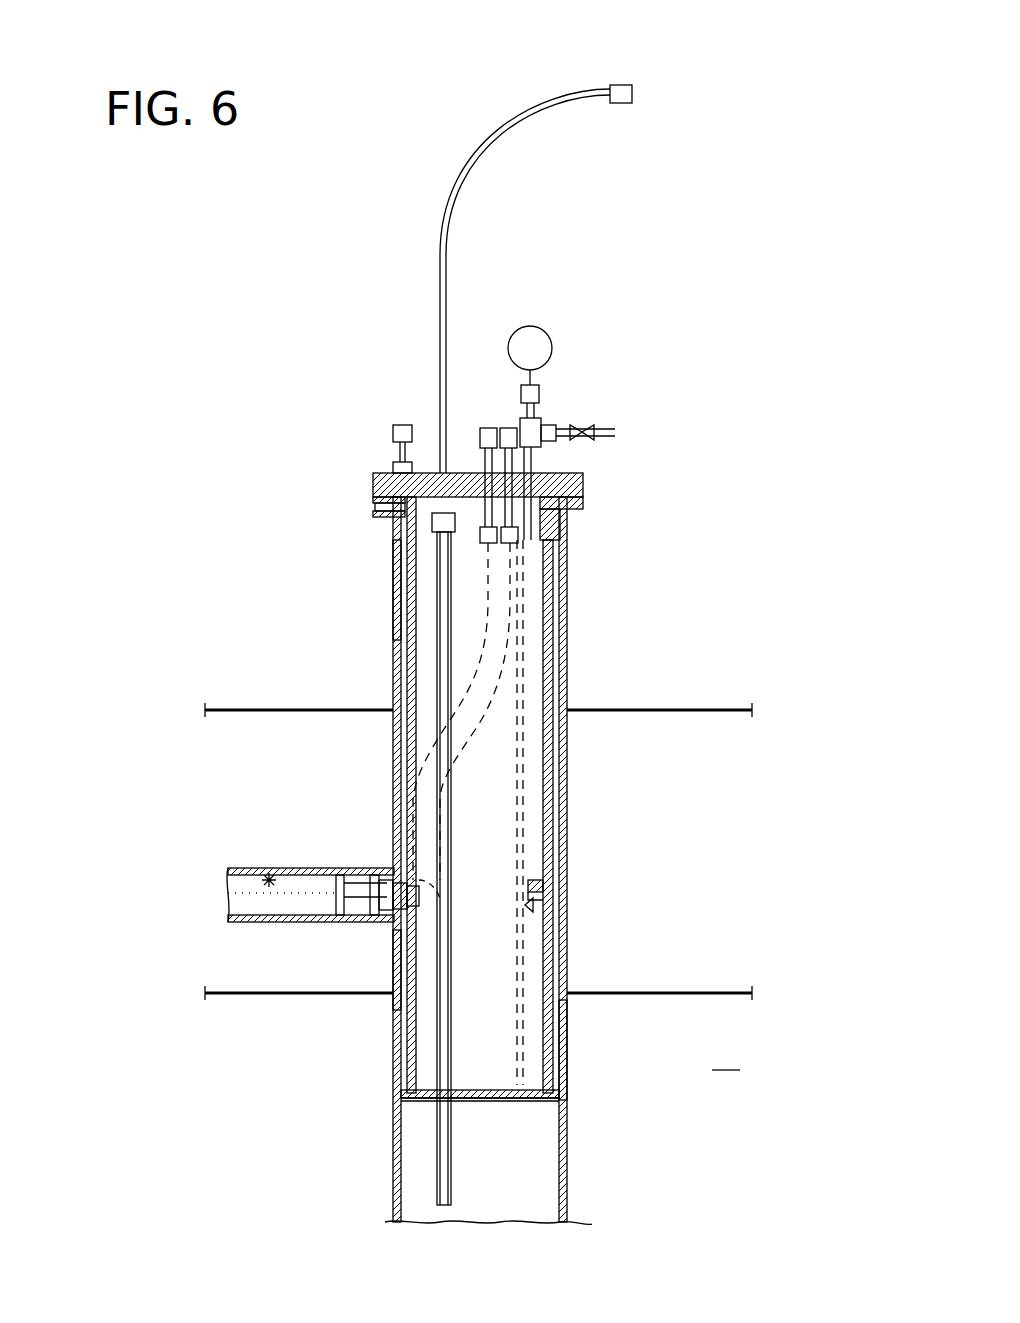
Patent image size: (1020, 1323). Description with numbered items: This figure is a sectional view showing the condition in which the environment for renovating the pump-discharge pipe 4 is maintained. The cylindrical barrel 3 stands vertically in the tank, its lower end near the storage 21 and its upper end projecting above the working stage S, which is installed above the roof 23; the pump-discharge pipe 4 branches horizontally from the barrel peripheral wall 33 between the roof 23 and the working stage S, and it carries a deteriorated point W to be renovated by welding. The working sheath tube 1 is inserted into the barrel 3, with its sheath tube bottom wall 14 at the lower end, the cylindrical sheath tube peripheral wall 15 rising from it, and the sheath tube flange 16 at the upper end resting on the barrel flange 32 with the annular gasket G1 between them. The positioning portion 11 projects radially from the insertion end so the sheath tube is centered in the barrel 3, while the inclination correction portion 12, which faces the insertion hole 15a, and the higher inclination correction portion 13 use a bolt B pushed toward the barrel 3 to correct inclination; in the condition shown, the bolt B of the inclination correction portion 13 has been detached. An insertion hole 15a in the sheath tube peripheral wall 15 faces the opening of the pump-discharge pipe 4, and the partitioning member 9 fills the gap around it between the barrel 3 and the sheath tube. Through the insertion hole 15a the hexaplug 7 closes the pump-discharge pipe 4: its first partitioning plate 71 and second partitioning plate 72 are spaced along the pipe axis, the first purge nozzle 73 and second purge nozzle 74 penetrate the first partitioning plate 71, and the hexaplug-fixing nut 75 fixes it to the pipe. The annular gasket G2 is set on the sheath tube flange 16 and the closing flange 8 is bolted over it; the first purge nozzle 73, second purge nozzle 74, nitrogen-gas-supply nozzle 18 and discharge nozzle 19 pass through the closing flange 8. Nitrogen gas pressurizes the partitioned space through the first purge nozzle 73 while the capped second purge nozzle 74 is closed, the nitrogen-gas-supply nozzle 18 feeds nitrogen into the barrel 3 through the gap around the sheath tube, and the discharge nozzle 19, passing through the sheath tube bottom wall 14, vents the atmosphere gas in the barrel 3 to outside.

The discharge nozzle 19 is at (552, 92).
The nitrogen-gas-supply nozzle 18 is at (394, 436).
The closing flange 8 is at (375, 482).
The annular gasket G2 is at (374, 498).
The sheath tube flange 16 is at (376, 505).
The annular gasket G1 is at (374, 513).
The barrel flange 32 is at (396, 517).
The barrel peripheral wall 33 is at (393, 592).
The barrel 3 is at (393, 680).
The inclination correction portion 13 is at (570, 522).
The working sheath tube 1 is at (566, 578).
The working stage S is at (722, 705).
The partitioning member 9 is at (415, 840).
The hexaplug-fixing nut 75 is at (412, 862).
The deteriorated point W is at (270, 873).
The pump-discharge pipe 4 is at (300, 868).
The first purge nozzle 73 is at (397, 880).
The inclination correction portion 12 is at (543, 884).
The bolt B is at (533, 905).
The hexaplug 7 is at (322, 905).
The second partitioning plate 72 is at (352, 915).
The second purge nozzle 74 is at (390, 918).
The first partitioning plate 71 is at (372, 925).
The insertion hole 15a is at (393, 935).
The roof 23 is at (722, 988).
The sheath tube peripheral wall 15 is at (566, 1045).
The storage 21 is at (727, 1058).
The positioning portion 11 is at (559, 1092).
The sheath tube bottom wall 14 is at (500, 1101).